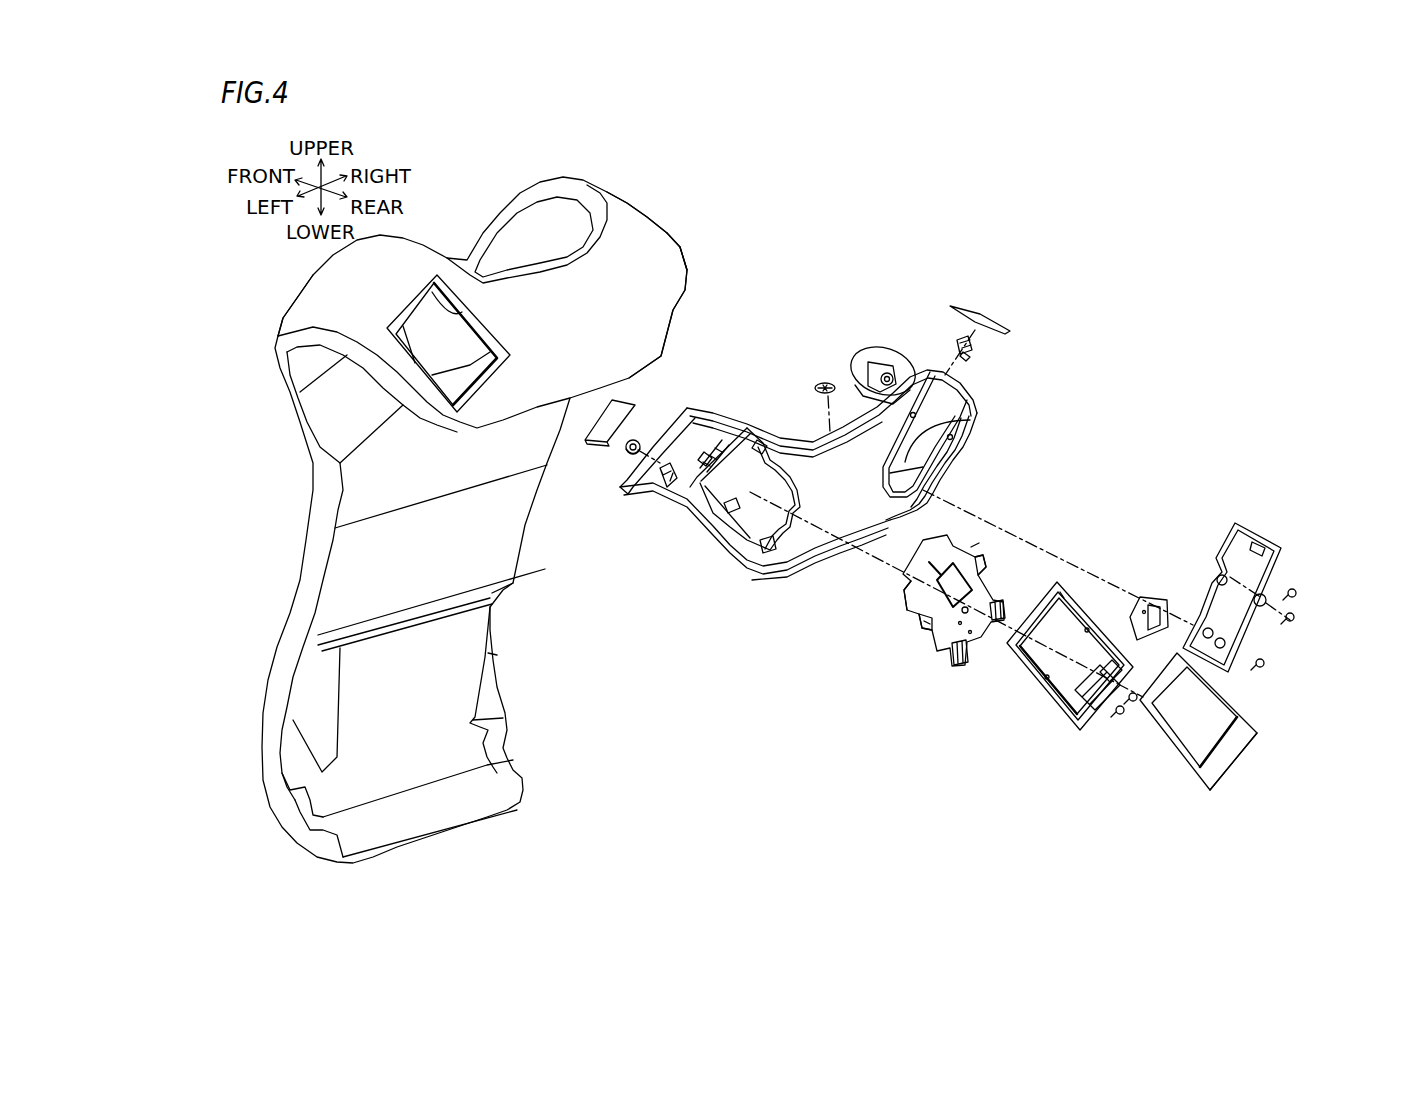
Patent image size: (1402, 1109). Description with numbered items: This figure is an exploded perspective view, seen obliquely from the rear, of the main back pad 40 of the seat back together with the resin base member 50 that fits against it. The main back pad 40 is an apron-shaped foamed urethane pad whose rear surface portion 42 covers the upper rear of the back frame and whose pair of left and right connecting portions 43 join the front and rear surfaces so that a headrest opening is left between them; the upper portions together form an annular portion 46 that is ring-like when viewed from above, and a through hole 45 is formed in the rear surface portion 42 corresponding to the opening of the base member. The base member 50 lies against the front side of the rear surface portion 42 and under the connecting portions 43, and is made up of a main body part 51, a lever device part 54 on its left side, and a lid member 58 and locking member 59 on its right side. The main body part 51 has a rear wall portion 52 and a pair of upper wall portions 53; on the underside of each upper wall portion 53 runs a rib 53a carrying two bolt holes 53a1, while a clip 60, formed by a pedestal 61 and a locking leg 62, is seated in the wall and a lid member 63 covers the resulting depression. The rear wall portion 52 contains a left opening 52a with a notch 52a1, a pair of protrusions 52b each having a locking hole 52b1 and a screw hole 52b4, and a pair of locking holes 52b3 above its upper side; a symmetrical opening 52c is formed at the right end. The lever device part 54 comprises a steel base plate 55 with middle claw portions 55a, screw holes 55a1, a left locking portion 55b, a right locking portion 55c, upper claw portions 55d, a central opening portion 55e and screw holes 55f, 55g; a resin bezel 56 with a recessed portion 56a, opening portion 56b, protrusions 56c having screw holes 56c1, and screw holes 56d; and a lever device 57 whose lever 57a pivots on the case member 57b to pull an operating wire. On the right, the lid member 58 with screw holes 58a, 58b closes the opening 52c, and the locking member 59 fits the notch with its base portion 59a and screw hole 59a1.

The main back pad 40 is at (629, 210).
The rear surface portion 42 is at (652, 289).
The connecting portions 43 is at (342, 287).
The opening 45 is at (437, 292).
The annular portion 46 is at (657, 239).
The base member 50 is at (934, 553).
The main body part 51 is at (779, 341).
The rear wall portion 52 is at (828, 555).
The opening 52a is at (730, 507).
The notch 52a1 is at (777, 552).
The protrusions 52b is at (748, 470).
The locking hole 52b1 is at (760, 430).
The locking holes 52b3 is at (718, 440).
The screw hole 52b4 is at (770, 460).
The opening 52c is at (960, 422).
The upper wall portions 53 is at (867, 353).
The rib 53a is at (857, 363).
The bolt holes 53a1 is at (883, 370).
The lever device part 54 is at (1013, 757).
The base plate 55 is at (933, 640).
The middle claw portion 55a is at (977, 557).
The screw hole 55a1 is at (970, 550).
The left locking portion 55b is at (963, 665).
The right locking portion 55c is at (983, 617).
The upper claw portions 55d is at (927, 537).
The opening portion 55e is at (917, 603).
The screw holes 55f is at (983, 603).
The screw holes 55g is at (972, 634).
The bezel 56 is at (1028, 667).
The recessed portion 56a is at (1073, 593).
The opening portion 56b is at (1087, 650).
The protrusion 56c is at (1047, 675).
The screw hole 56c1 is at (1060, 700).
The screw holes 56d is at (1108, 712).
The lever device 57 is at (1183, 757).
The lever 57a is at (1210, 707).
The case member 57b is at (1210, 790).
The lid member 58 is at (1263, 537).
The screw holes 58a is at (1223, 575).
The screw holes 58b is at (1213, 630).
The locking member 59 is at (1157, 597).
The base portion 59a is at (1168, 598).
The screw hole 59a1 is at (1138, 593).
The clip 60 is at (800, 405).
The pedestal 61 is at (655, 477).
The locking leg 62 is at (628, 458).
The lid member 63 is at (623, 408).